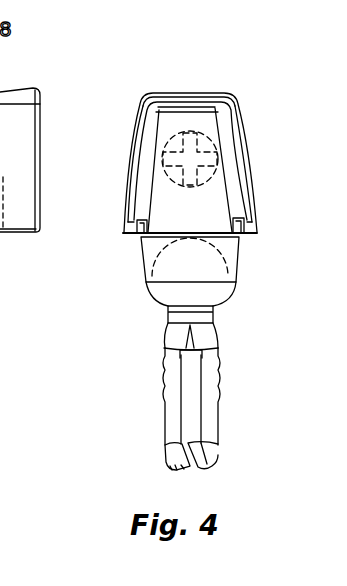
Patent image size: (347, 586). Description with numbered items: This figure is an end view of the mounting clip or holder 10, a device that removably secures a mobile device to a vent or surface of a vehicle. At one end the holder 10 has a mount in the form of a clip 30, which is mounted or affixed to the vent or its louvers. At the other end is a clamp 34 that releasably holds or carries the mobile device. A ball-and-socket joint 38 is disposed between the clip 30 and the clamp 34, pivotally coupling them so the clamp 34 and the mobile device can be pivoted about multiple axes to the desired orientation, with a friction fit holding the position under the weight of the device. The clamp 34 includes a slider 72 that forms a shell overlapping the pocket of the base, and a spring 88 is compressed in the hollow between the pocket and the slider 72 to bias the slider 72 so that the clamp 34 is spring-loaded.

The mounting clip or holder 10 is at (105, 385).
The clip 30 is at (163, 417).
The clamp 34 is at (123, 207).
The ball-and-socket joint 38 is at (147, 292).
The slider 72 is at (197, 88).
The spring 88 is at (148, 127).